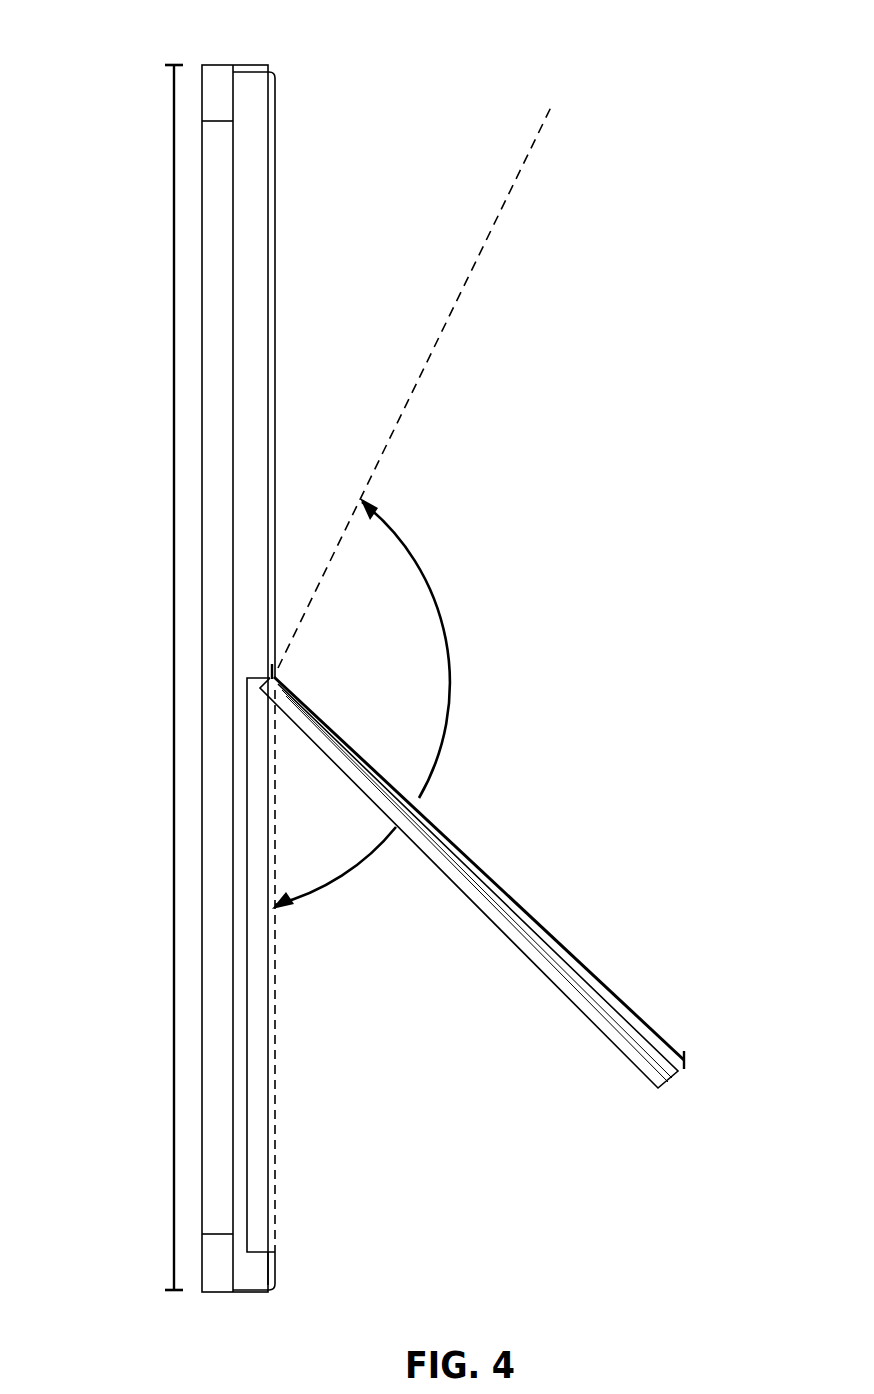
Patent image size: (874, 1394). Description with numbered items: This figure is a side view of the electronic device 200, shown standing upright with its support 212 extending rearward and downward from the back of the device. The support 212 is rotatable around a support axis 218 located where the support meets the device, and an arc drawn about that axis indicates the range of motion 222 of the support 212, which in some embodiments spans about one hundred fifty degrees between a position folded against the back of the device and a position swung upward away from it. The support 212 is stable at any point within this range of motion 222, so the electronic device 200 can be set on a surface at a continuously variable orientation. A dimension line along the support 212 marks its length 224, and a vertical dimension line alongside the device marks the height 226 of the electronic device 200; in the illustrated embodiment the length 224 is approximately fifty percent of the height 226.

The electronic device 200 is at (352, 58).
The support 212 is at (553, 970).
The support axis 218 is at (274, 677).
The range of motion 222 is at (437, 597).
The length 224 is at (690, 1008).
The height 226 is at (174, 1143).